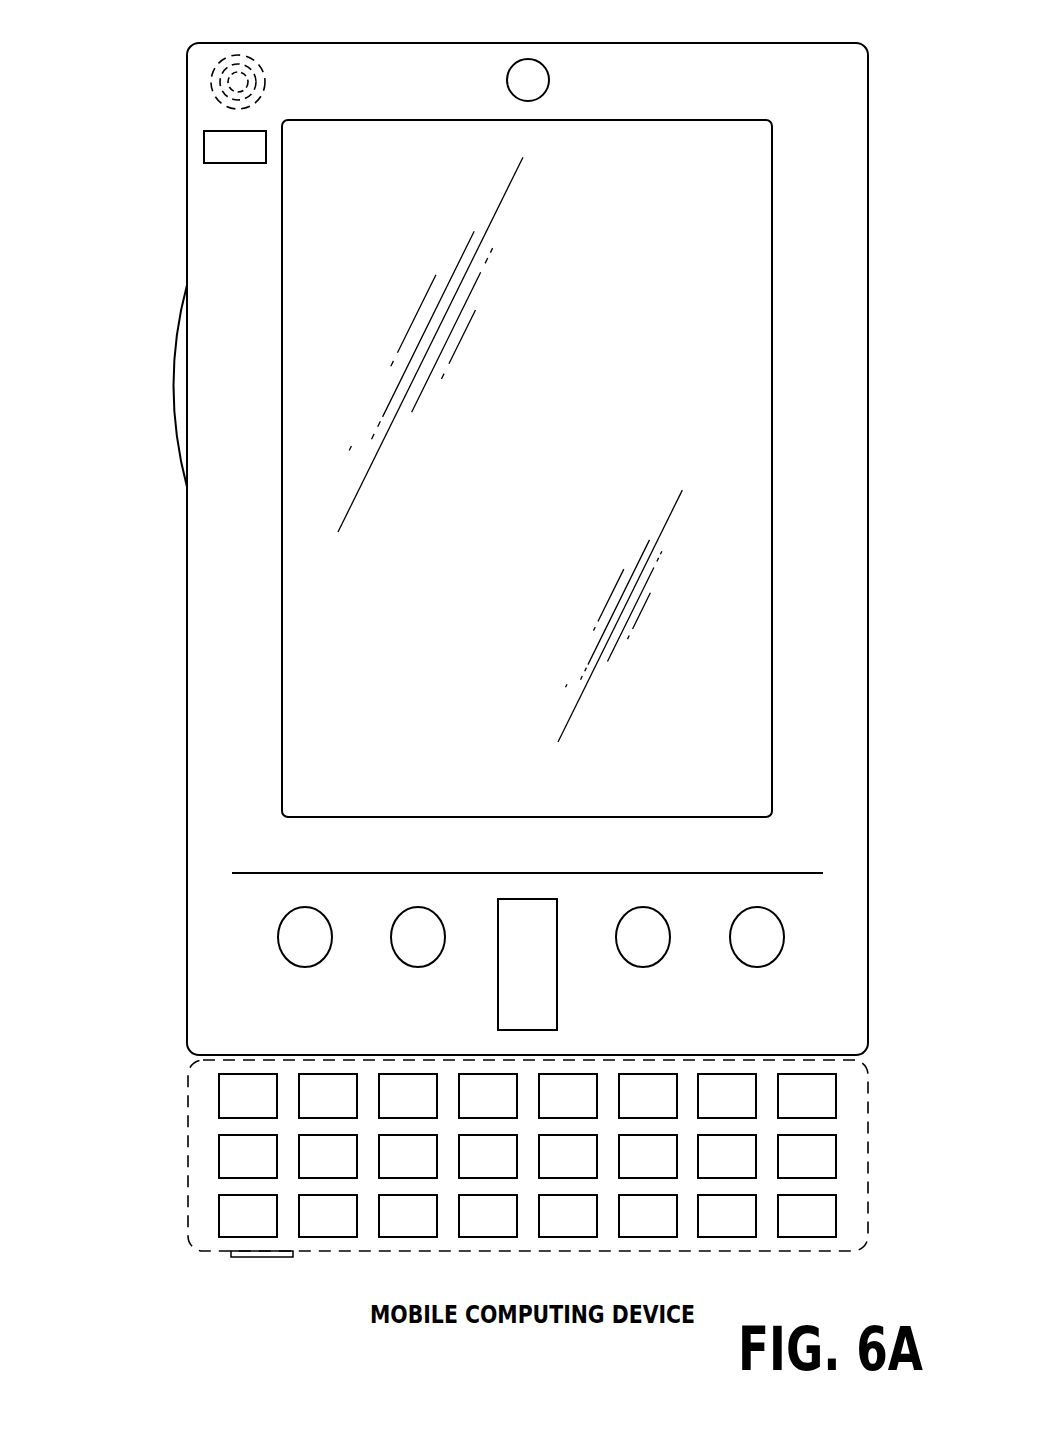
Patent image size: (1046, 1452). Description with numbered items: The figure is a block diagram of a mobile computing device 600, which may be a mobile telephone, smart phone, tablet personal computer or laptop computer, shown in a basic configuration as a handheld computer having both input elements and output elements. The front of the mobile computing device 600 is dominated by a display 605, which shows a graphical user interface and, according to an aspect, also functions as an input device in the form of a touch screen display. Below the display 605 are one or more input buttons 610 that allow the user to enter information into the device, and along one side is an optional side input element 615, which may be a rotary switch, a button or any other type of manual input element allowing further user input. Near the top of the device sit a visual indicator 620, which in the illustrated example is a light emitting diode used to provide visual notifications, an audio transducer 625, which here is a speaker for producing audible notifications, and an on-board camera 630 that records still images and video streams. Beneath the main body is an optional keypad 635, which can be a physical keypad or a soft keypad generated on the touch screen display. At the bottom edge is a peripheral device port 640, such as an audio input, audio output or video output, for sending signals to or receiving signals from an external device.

The mobile computing device 600 is at (832, 44).
The display 605 is at (307, 647).
The input buttons 610 is at (305, 967).
The side input element 615 is at (166, 385).
The visual indicator 620 is at (204, 147).
The audio transducer 625 is at (210, 84).
The on-board camera 630 is at (528, 59).
The keypad 635 is at (197, 1155).
The peripheral device port 640 is at (240, 1258).